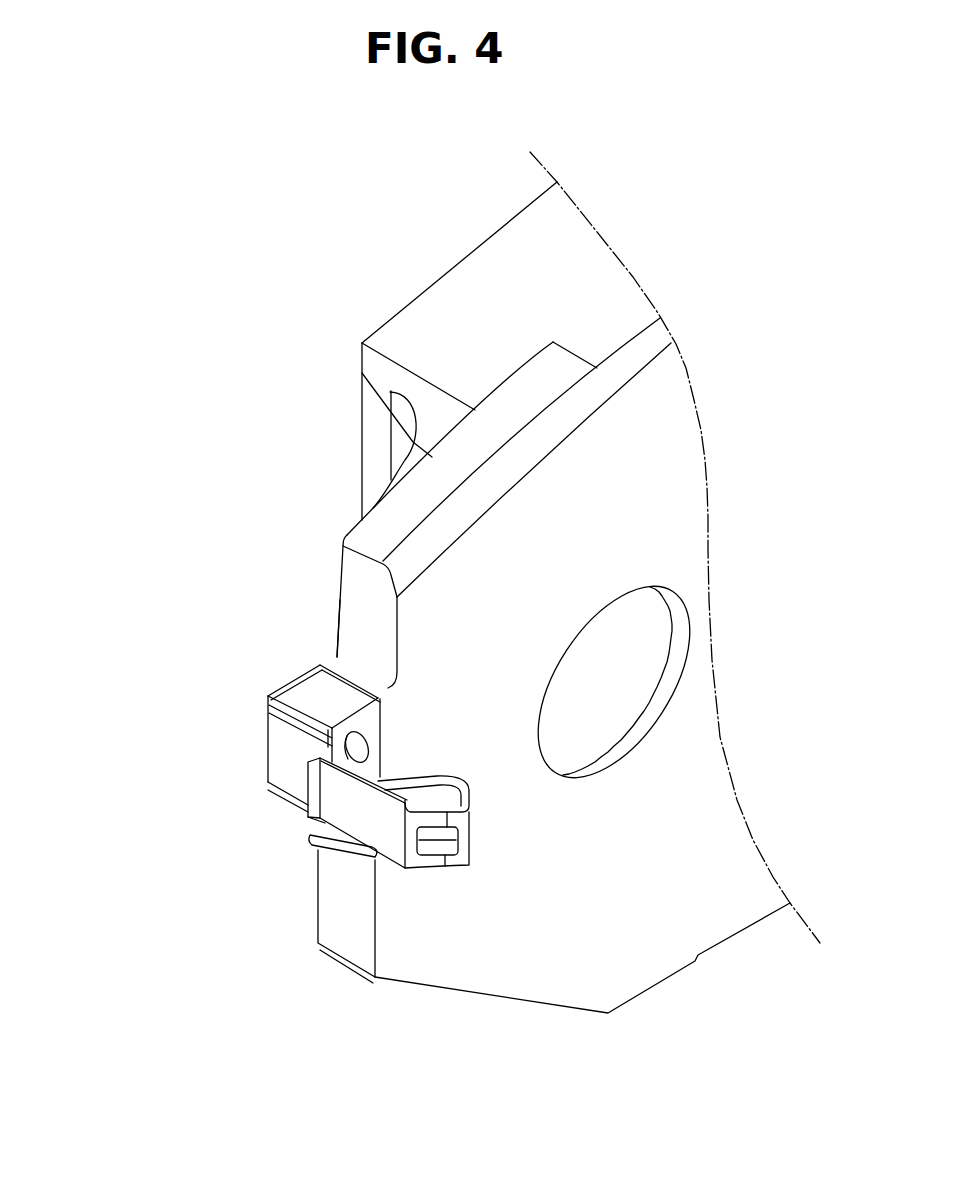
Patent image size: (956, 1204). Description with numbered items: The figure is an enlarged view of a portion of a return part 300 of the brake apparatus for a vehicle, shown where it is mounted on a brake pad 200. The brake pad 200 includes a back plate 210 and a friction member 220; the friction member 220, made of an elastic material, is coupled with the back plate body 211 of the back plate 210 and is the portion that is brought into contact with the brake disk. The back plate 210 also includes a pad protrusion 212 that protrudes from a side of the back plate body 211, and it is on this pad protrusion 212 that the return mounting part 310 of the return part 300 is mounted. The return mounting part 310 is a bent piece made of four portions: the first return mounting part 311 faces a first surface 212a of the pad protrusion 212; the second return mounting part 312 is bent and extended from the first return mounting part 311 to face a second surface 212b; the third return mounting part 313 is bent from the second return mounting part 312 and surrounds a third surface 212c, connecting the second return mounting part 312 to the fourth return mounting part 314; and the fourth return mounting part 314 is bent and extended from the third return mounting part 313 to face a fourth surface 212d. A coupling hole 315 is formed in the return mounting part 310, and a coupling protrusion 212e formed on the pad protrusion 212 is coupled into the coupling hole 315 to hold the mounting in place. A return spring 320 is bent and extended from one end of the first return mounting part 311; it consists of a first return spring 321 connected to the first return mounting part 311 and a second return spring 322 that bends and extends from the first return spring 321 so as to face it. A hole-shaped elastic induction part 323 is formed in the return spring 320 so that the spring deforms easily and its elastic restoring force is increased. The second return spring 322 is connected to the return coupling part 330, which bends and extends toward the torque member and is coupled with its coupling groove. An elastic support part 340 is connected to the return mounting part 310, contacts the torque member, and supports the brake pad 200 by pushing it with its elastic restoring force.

The brake pad 200 is at (683, 440).
The friction member 220 is at (463, 293).
The back plate 210 is at (391, 547).
The back plate body 211 is at (455, 449).
The pad protrusion 212 is at (316, 626).
The first surface 212a is at (280, 716).
The second surface 212b is at (352, 670).
The third surface 212c is at (392, 673).
The fourth surface 212d is at (388, 720).
The coupling protrusion 212e is at (424, 734).
The coupling hole 315 is at (365, 747).
The return part 300 is at (351, 838).
The return mounting part 310 is at (200, 739).
The first return mounting part 311 is at (275, 760).
The second return mounting part 312 is at (282, 716).
The third return mounting part 313 is at (313, 688).
The fourth return mounting part 314 is at (246, 816).
The return spring 320 is at (480, 903).
The first return spring 321 is at (460, 791).
The second return spring 322 is at (398, 842).
The elastic induction part 323 is at (447, 797).
The return coupling part 330 is at (315, 822).
The elastic support part 340 is at (347, 858).